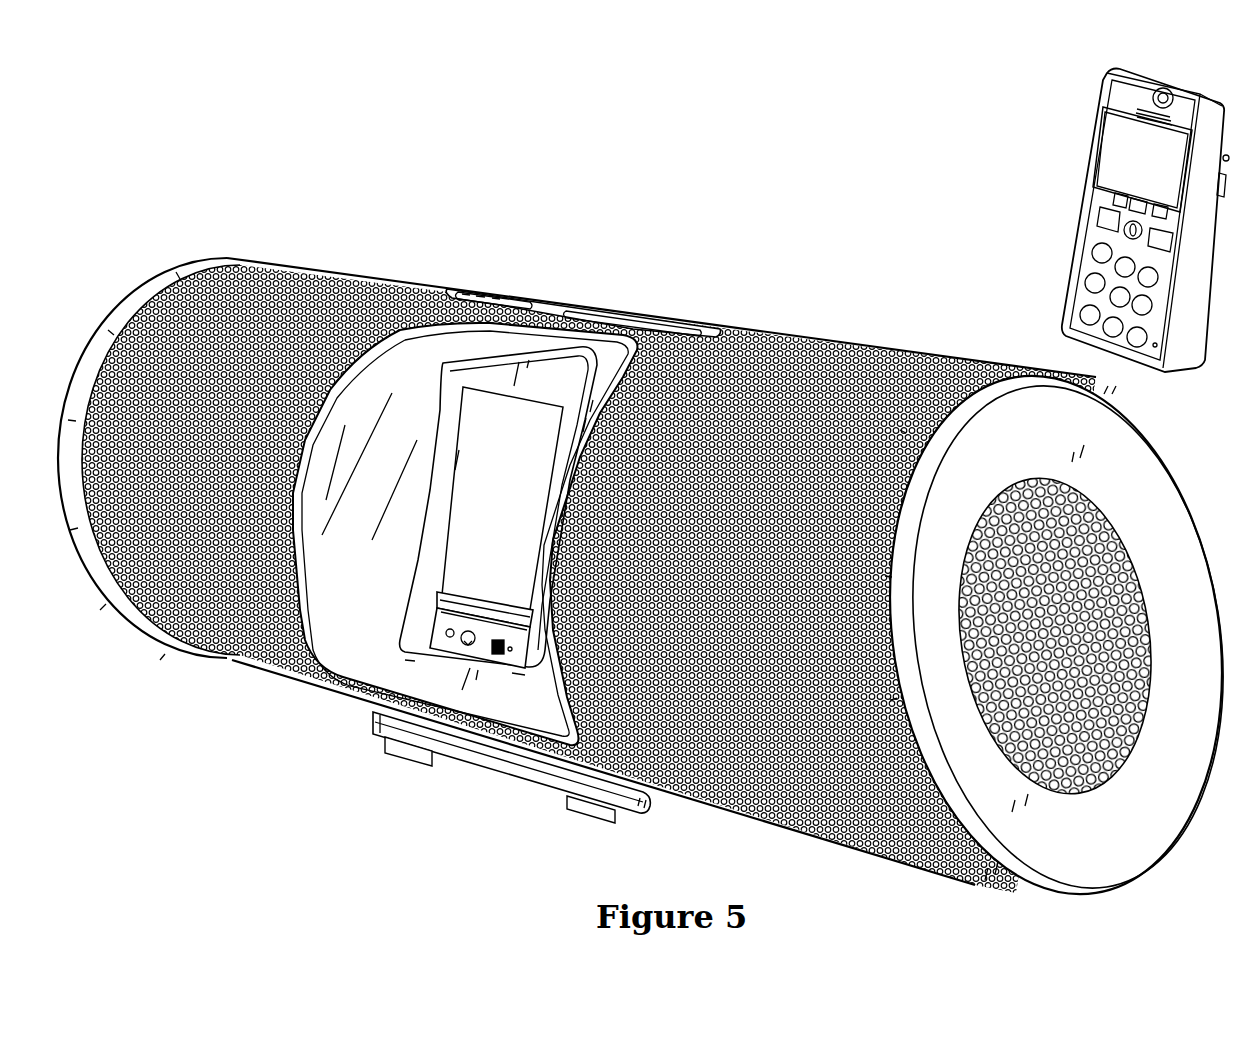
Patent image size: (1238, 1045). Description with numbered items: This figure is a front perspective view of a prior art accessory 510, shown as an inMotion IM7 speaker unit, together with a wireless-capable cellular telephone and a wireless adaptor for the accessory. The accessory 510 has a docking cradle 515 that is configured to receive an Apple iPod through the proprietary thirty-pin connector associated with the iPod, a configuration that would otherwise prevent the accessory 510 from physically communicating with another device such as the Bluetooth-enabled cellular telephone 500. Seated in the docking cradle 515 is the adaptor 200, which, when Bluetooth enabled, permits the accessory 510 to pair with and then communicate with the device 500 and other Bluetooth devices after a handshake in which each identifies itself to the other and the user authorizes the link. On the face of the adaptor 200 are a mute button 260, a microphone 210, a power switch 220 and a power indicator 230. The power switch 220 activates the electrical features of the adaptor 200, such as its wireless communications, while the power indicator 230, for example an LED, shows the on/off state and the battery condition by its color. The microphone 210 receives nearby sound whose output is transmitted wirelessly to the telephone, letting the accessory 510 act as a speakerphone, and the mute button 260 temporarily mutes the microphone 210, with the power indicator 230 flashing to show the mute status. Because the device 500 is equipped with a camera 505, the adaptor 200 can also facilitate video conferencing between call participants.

The accessory 510 is at (648, 588).
The docking cradle 515 is at (447, 553).
The adaptor 200 is at (418, 688).
The mute button 260 is at (441, 637).
The microphone 210 is at (461, 645).
The power switch 220 is at (489, 650).
The power indicator 230 is at (510, 654).
The device 500 is at (1090, 207).
The camera 505 is at (1175, 88).